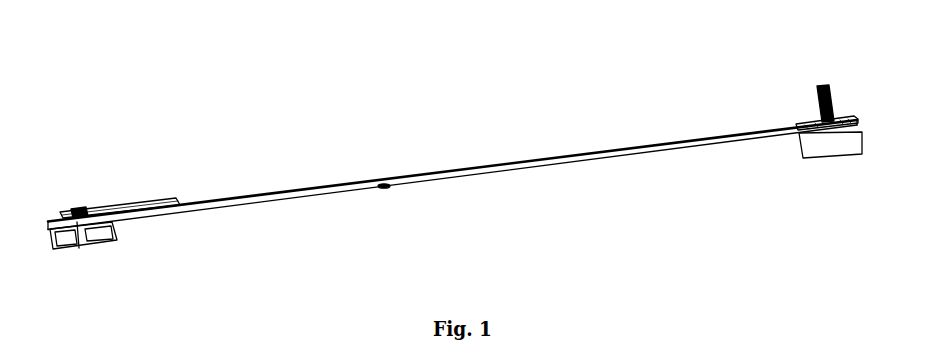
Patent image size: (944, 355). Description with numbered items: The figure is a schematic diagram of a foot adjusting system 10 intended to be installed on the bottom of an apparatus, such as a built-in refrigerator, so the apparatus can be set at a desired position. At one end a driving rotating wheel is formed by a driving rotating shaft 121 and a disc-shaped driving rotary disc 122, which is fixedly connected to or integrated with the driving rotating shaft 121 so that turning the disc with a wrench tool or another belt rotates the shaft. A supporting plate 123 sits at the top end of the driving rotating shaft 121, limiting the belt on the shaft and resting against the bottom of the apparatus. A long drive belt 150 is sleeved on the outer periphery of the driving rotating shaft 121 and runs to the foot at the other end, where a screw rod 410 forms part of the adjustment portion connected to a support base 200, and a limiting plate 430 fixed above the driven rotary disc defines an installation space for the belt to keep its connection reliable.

The foot adjusting system 10 is at (89, 34).
The driving rotating shaft 121 is at (80, 209).
The driving rotary disc 122 is at (82, 240).
The supporting plate 123 is at (137, 198).
The drive belt 150 is at (386, 186).
The support base 200 is at (805, 150).
The screw rod 410 is at (822, 86).
The limiting plate 430 is at (843, 115).